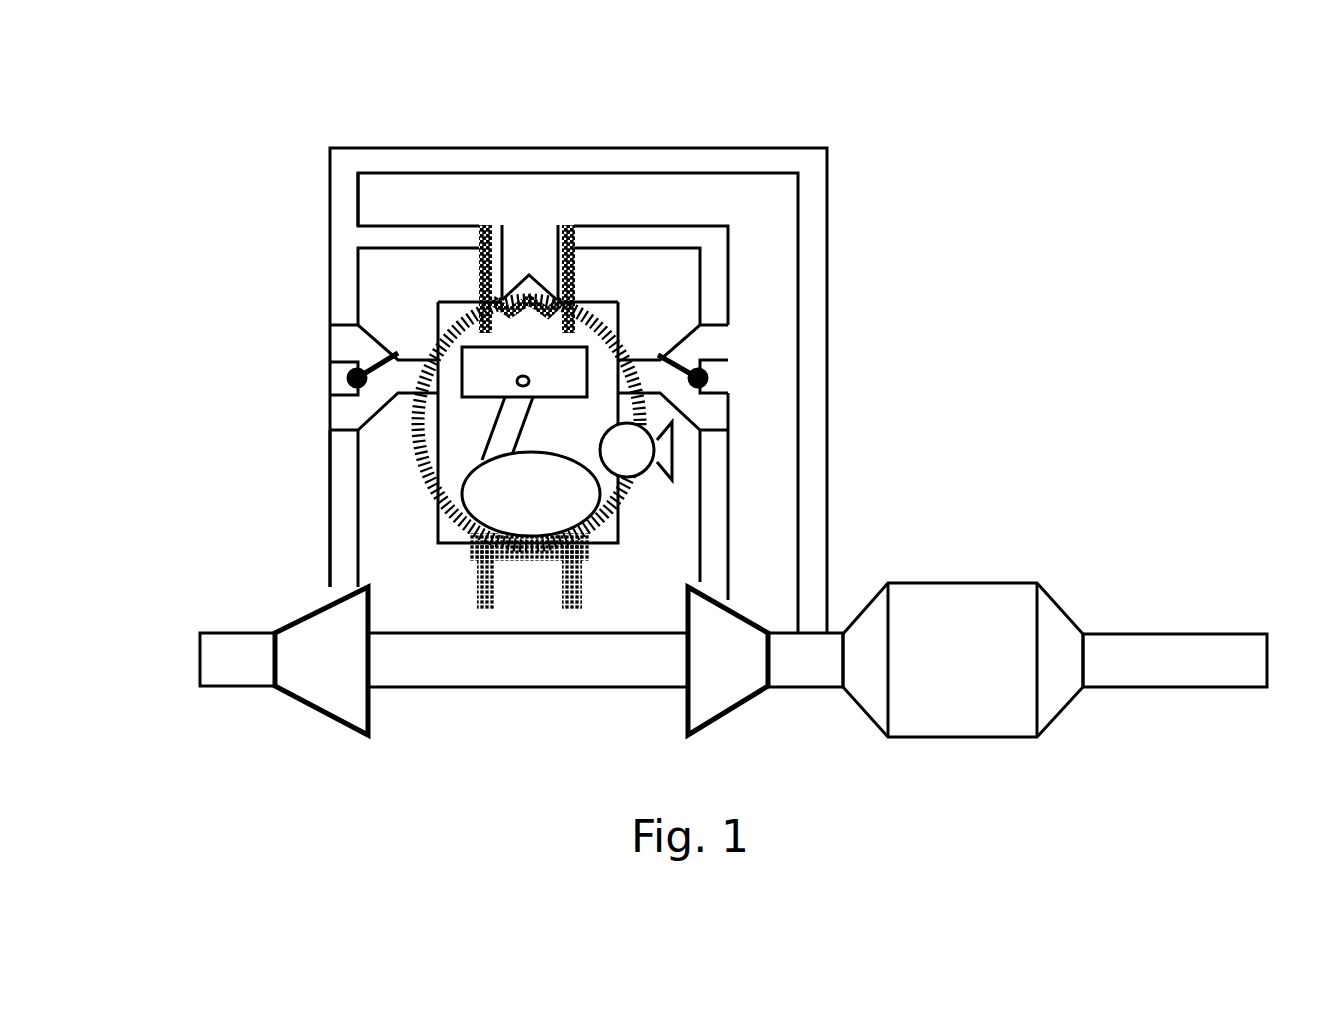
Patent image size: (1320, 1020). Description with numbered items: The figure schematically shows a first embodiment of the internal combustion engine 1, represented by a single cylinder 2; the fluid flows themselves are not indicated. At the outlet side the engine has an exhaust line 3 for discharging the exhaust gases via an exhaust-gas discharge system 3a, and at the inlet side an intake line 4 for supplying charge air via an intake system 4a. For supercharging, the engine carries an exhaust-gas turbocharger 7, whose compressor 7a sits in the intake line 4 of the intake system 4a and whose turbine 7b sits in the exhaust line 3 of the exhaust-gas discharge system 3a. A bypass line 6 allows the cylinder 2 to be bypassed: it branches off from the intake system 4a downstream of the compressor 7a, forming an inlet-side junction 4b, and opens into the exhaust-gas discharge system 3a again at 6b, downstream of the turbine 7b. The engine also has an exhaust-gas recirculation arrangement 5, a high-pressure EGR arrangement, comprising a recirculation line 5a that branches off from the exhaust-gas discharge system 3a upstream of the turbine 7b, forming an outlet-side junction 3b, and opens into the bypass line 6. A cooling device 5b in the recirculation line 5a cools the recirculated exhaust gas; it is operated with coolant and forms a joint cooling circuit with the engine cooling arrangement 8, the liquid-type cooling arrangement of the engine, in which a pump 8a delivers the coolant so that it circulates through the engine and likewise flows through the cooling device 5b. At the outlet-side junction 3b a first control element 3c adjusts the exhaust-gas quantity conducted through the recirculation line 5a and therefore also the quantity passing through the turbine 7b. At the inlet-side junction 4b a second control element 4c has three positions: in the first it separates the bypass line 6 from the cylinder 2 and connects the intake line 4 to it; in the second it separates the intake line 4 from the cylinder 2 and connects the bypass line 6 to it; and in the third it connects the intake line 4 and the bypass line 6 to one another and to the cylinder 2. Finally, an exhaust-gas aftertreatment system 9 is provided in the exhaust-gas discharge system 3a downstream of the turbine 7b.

The internal combustion engine 1 is at (865, 95).
The cylinder 2 is at (447, 533).
The exhaust line 3 is at (723, 517).
The exhaust-gas discharge system 3a is at (860, 450).
The outlet-side junction 3b is at (762, 352).
The first control element 3c is at (708, 380).
The intake line 4 is at (337, 503).
The intake system 4a is at (277, 488).
The inlet-side junction 4b is at (305, 343).
The second control element 4c is at (340, 382).
The exhaust-gas recirculation arrangement 5 is at (695, 203).
The recirculation line 5a is at (713, 263).
The cooling device 5b is at (565, 253).
The bypass line 6 is at (462, 162).
The opening of the bypass line into the exhaust-gas discharge system 6b is at (807, 627).
The exhaust-gas turbocharger 7 is at (585, 667).
The compressor 7a is at (333, 683).
The turbine 7b is at (742, 663).
The engine cooling arrangement 8 is at (423, 437).
The pump 8a is at (643, 452).
The exhaust-gas aftertreatment system 9 is at (985, 597).